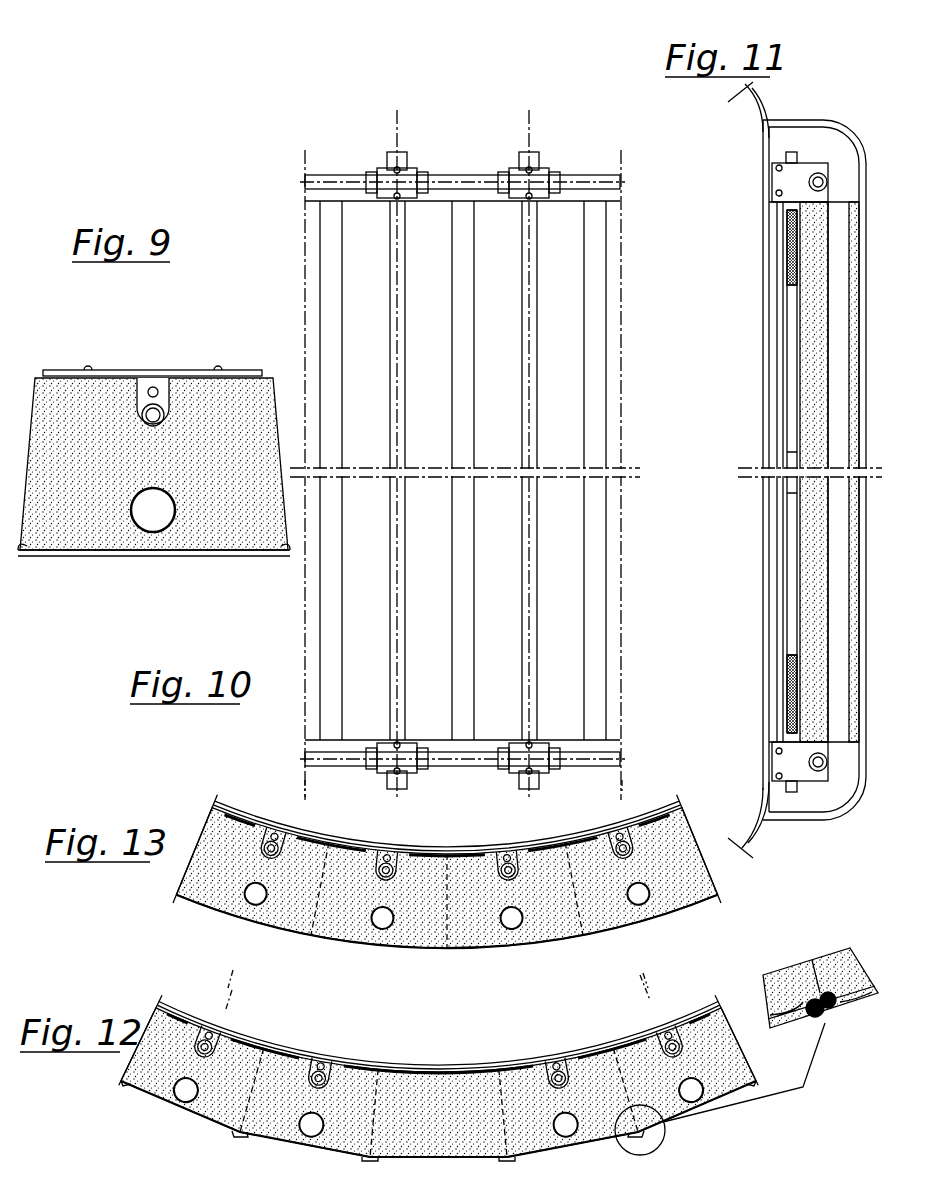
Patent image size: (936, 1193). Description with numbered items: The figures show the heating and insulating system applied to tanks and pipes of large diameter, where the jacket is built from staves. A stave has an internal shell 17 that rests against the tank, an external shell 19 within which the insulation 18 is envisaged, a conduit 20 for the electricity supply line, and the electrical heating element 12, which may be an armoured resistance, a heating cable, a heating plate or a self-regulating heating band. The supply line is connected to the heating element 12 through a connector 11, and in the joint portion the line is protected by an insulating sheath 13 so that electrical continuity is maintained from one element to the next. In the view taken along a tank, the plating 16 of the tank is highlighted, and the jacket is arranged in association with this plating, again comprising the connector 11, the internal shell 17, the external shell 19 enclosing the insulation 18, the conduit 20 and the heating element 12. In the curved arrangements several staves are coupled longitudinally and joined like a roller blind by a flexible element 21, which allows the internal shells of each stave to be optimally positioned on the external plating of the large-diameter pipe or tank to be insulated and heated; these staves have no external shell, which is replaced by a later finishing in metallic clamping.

In FIG. 10, the connector 11 is at (397, 167).
In FIG. 11, the connector 11 is at (795, 182).
In FIG. 9, the heating element 12 is at (155, 410).
In FIG. 11, the heating element 12 is at (782, 348).
In FIG. 13, the heating element 12 is at (516, 862).
In FIG. 12, the heating element 12 is at (445, 1076).
In FIG. 10, the insulating sheath 13 is at (341, 174).
In FIG. 11, the plating 16 is at (768, 372).
In FIG. 13, the plating 16 is at (450, 848).
In FIG. 12, the plating 16 is at (440, 1062).
In FIG. 9, the internal shell 17 is at (150, 372).
In FIG. 11, the internal shell 17 is at (773, 247).
In FIG. 13, the internal shell 17 is at (388, 848).
In FIG. 9, the insulation 18 is at (228, 405).
In FIG. 11, the insulation 18 is at (855, 253).
In FIG. 13, the insulation 18 is at (417, 877).
In FIG. 9, the external shell 19 is at (156, 556).
In FIG. 11, the external shell 19 is at (862, 625).
In FIG. 13, the external shell 19 is at (532, 944).
In FIG. 12, the external shell 19 is at (290, 1143).
In FIG. 9, the conduit 20 is at (156, 512).
In FIG. 11, the conduit 20 is at (848, 335).
In FIG. 13, the conduit 20 is at (385, 922).
In FIG. 12, the flexible element 21 is at (830, 1002).